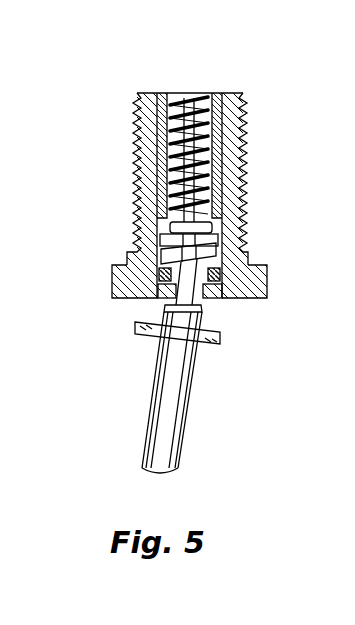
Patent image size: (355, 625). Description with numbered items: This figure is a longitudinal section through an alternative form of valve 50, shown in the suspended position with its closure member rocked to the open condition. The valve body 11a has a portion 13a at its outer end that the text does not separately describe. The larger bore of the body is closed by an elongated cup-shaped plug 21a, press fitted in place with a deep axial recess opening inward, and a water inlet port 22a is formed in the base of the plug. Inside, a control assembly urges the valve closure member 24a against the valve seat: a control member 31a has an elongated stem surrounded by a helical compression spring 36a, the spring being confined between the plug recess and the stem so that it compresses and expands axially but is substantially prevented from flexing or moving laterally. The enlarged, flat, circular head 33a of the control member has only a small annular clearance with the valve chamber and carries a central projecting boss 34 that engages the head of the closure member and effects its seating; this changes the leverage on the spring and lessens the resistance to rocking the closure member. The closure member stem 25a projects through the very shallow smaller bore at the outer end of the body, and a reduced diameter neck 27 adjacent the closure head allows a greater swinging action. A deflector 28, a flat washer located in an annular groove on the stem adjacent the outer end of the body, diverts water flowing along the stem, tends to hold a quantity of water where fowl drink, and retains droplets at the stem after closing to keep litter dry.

The valve 50 is at (253, 111).
The valve body 11a is at (245, 168).
The flange 13a is at (122, 278).
The cup-shaped plug 21a is at (167, 92).
The water inlet port 22a is at (189, 93).
The helical compression spring 36a is at (166, 118).
The control member 31a is at (160, 223).
The control member head 33a is at (215, 232).
The central projecting boss 34 is at (192, 245).
The reduced diameter neck 27 is at (190, 304).
The deflector 28 is at (136, 333).
The valve closure member 24a is at (198, 420).
The closure member stem 25a is at (158, 405).